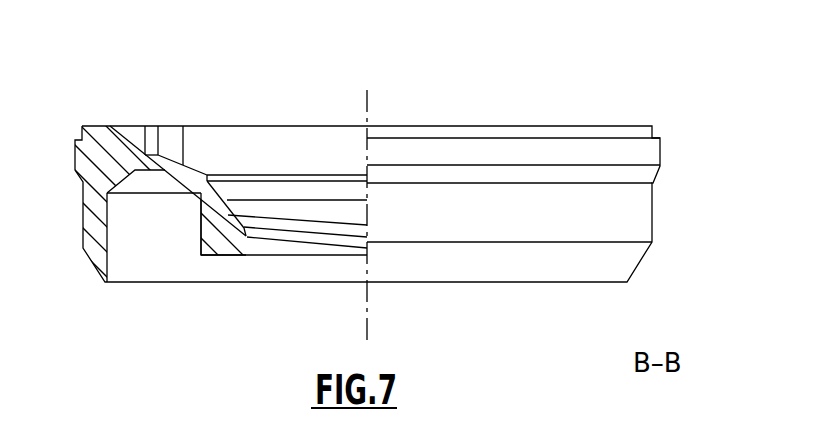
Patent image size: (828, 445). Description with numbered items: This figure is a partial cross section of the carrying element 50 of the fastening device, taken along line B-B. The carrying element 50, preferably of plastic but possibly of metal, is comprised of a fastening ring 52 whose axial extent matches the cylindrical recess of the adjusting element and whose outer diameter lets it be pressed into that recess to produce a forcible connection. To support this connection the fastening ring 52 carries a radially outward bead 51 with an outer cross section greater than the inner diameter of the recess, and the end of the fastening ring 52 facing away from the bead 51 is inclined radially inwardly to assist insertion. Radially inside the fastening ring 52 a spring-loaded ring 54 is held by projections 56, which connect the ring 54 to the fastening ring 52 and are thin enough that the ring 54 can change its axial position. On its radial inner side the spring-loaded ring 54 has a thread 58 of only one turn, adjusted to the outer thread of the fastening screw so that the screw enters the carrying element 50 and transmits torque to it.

The carrying element 50 is at (698, 67).
The radially outward bead 51 is at (647, 152).
The fastening ring 52 is at (637, 198).
The spring-loaded ring 54 is at (218, 248).
The projections 56 is at (176, 168).
The thread 58 is at (240, 233).